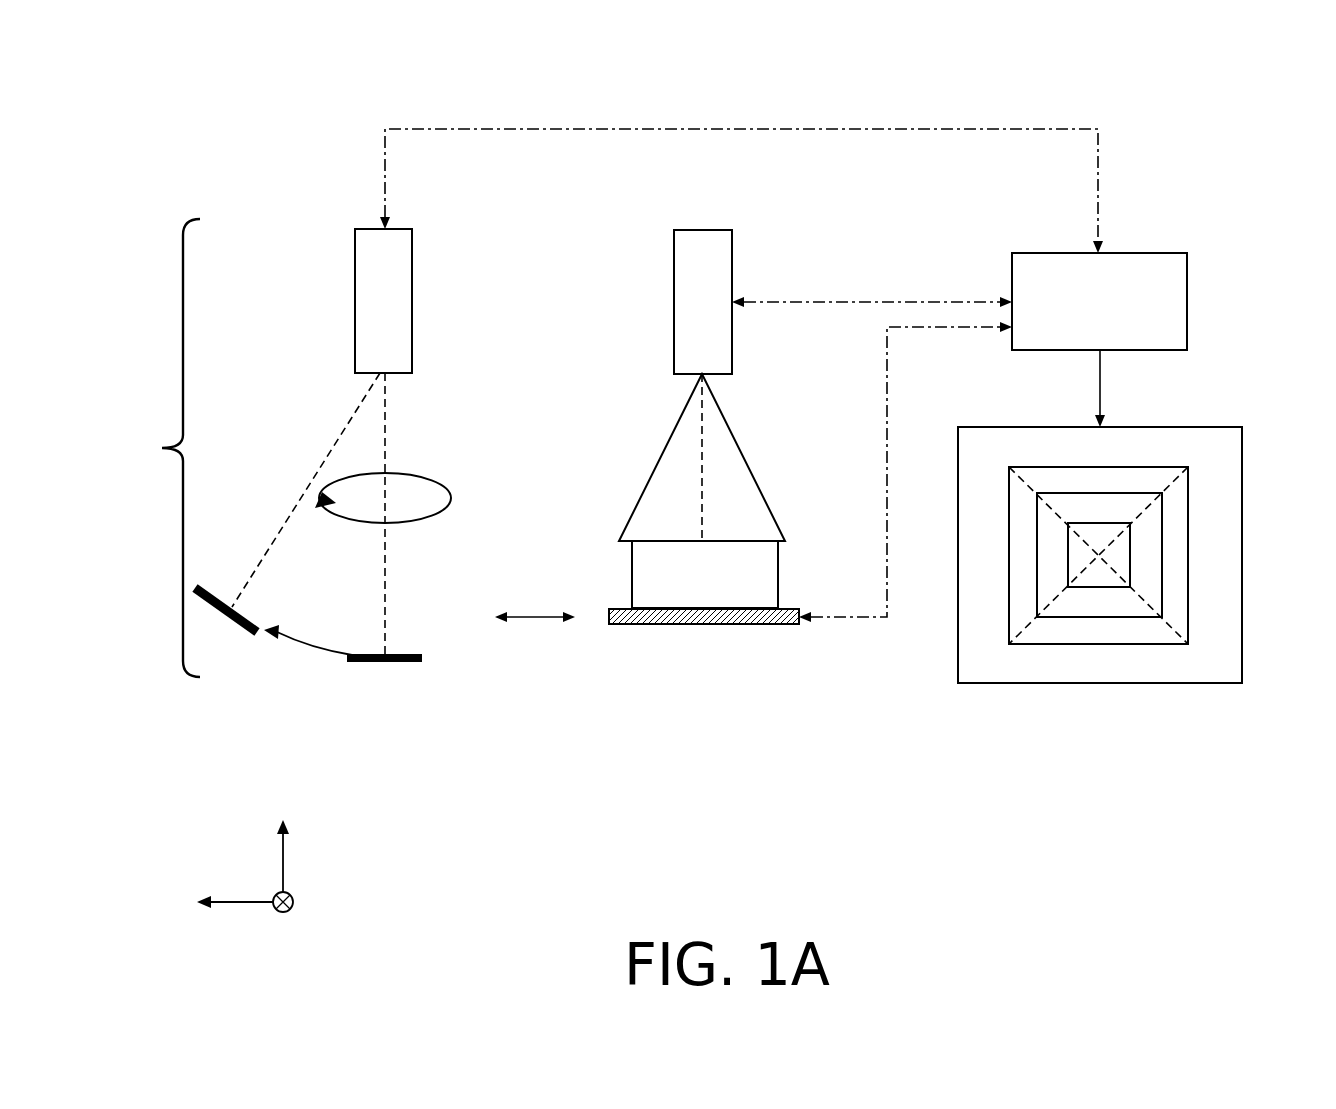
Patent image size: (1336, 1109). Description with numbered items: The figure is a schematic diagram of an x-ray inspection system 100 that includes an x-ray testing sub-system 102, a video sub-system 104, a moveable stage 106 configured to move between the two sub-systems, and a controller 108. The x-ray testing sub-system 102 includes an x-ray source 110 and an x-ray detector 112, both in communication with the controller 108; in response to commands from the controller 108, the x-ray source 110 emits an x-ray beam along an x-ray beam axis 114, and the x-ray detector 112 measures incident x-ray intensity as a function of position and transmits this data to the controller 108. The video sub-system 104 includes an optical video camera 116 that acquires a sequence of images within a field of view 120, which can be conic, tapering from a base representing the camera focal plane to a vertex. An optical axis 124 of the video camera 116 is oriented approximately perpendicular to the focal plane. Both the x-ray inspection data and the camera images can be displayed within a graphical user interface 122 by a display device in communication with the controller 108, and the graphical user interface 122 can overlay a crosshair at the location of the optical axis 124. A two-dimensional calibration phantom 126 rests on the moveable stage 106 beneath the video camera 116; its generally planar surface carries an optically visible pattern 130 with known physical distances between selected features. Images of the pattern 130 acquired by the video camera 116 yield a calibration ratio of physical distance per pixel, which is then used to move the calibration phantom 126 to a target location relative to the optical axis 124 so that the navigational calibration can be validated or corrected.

The x-ray inspection system 100 is at (1227, 118).
The x-ray testing sub-system 102 is at (296, 464).
The video sub-system 104 is at (749, 292).
The moveable stage 106 is at (697, 625).
The controller 108 is at (1079, 312).
The x-ray source 110 is at (364, 312).
The x-ray detector 112 is at (372, 663).
The x-ray beam axis 114 is at (386, 448).
The optical video camera 116 is at (683, 312).
The field of view 120 is at (747, 460).
The graphical user interface 122 is at (1198, 683).
The optical axis 124 is at (702, 433).
The calibration phantom 126 is at (685, 589).
The optically visible pattern 130 is at (1067, 645).